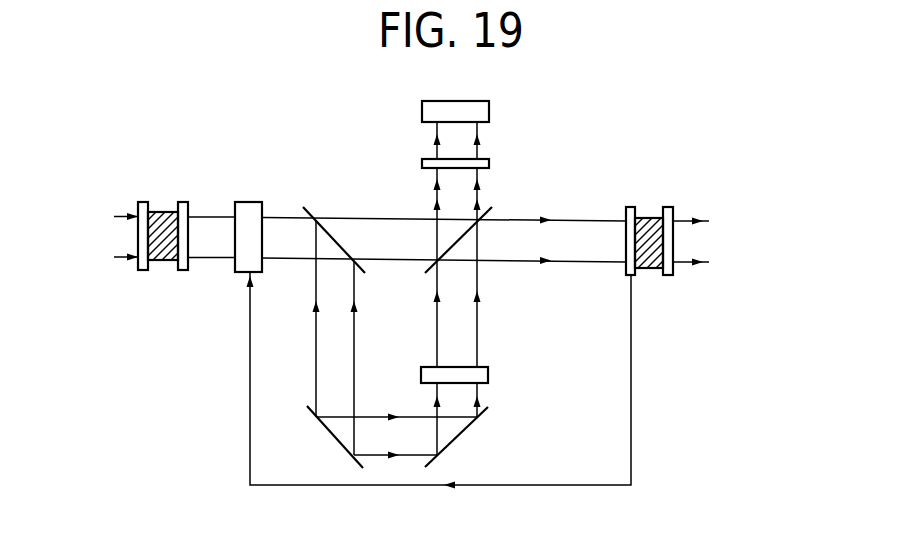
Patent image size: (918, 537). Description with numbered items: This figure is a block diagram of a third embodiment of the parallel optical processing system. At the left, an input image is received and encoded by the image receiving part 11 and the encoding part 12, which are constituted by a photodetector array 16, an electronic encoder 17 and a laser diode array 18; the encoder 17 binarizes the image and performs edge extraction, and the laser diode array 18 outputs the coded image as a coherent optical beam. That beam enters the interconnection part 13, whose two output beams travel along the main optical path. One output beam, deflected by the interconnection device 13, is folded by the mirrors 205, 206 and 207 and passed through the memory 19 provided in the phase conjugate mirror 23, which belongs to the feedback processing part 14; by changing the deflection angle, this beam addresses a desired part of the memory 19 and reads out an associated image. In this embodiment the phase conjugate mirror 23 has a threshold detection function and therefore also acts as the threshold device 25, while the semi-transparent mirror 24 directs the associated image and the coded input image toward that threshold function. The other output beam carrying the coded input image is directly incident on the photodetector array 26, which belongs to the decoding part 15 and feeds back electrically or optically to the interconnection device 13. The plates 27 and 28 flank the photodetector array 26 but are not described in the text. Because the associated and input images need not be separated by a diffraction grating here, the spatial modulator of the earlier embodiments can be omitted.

The image receiving part 11 is at (170, 238).
The encoding part 12 is at (170, 238).
The interconnection part 13 is at (253, 202).
The feedback processing part 14 is at (412, 331).
The decoding part 15 is at (663, 241).
The photodetector array 16 is at (143, 202).
The electronic encoder 17 is at (164, 211).
The laser diode array 18 is at (186, 202).
The memory 19 is at (489, 164).
The phase conjugate mirror 23 is at (504, 384).
The semi-transparent mirror 24 is at (462, 238).
The threshold device 25 is at (488, 375).
The photodetector array 26 is at (630, 207).
The electro-optic crystal 27 is at (651, 218).
The electrode plate 28 is at (669, 207).
The mirror 205 is at (323, 225).
The mirror 206 is at (322, 423).
The mirror 207 is at (465, 430).